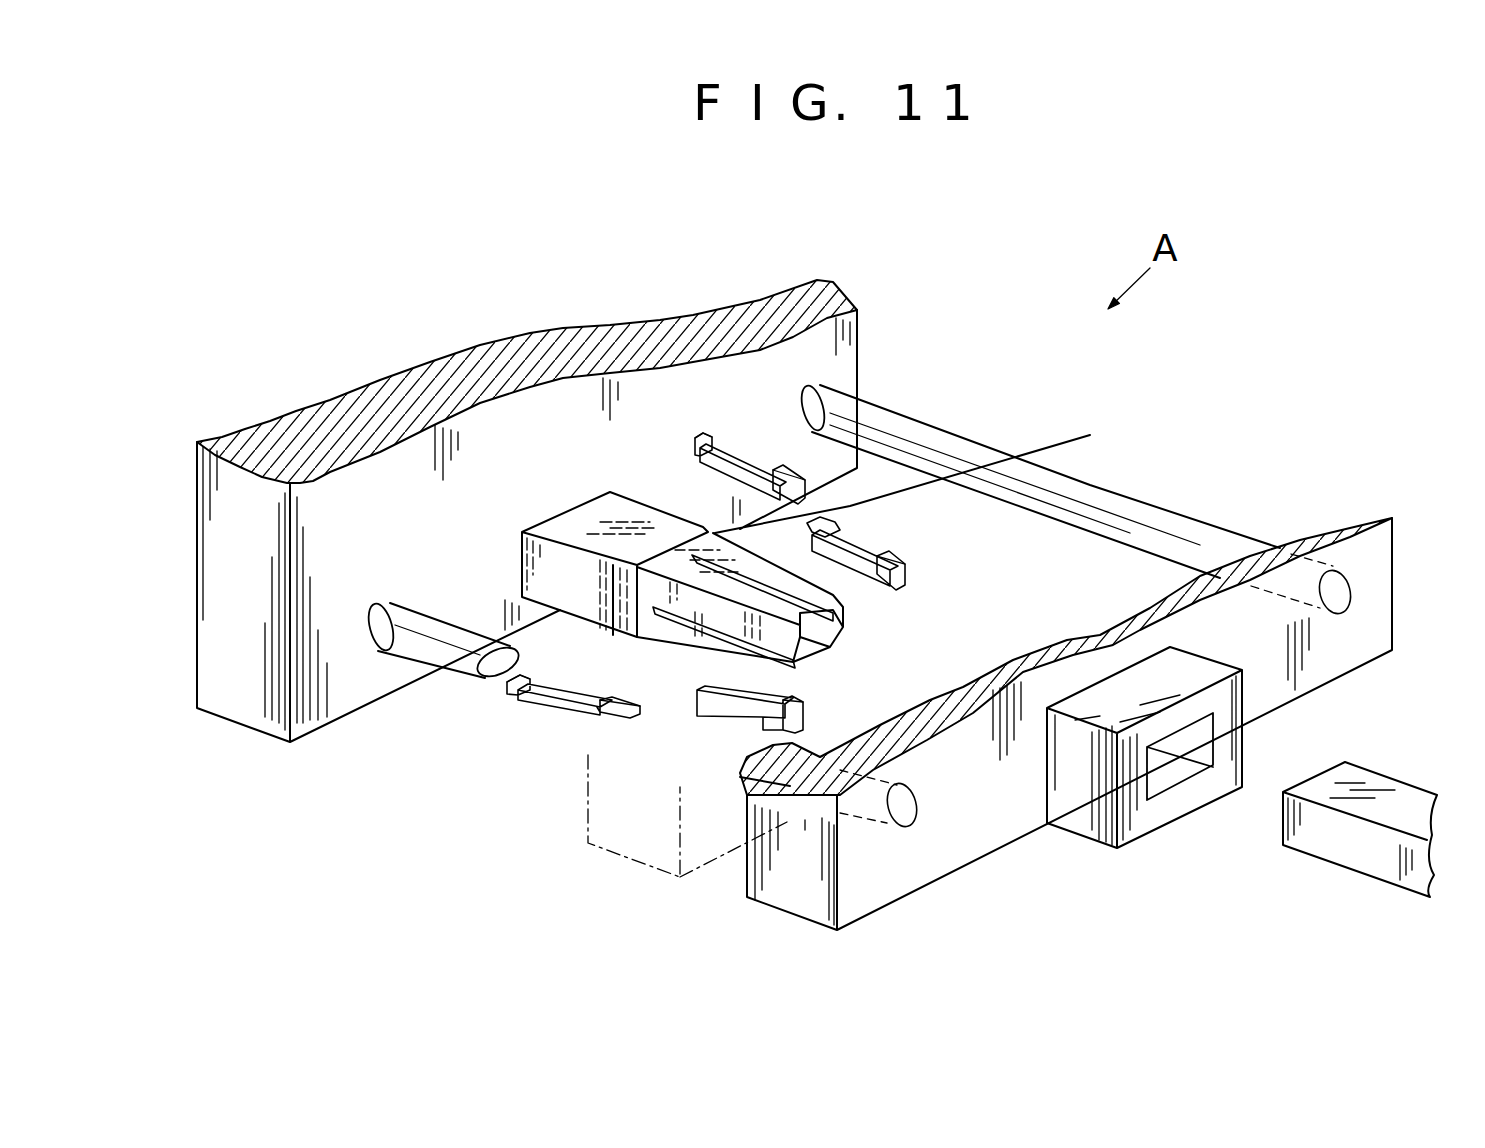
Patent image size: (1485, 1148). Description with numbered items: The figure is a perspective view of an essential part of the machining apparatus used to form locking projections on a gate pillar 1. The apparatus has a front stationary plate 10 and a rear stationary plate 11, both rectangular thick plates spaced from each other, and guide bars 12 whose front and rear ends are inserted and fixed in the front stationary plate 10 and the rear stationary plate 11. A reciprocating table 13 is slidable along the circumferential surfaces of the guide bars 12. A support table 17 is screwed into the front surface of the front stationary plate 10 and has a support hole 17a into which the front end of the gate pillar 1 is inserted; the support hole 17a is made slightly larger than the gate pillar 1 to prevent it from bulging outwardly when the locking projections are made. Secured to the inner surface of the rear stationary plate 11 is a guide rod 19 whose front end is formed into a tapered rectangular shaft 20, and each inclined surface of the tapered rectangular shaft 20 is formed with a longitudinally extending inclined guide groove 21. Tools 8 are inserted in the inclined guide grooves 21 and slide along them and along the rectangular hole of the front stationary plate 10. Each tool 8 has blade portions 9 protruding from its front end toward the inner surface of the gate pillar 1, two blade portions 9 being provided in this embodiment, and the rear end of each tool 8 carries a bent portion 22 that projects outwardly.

The gate pillar 1 is at (1360, 848).
The tool 8 is at (733, 452).
The blade portion 9 is at (800, 482).
The front stationary plate 10 is at (1360, 653).
The rear stationary plate 11 is at (843, 357).
The guide bar 12 is at (1165, 520).
The reciprocating table 13 is at (655, 853).
The support table 17 is at (1090, 822).
The support hole 17a is at (1165, 783).
The guide rod 19 is at (597, 522).
The tapered rectangular shaft 20 is at (745, 612).
The inclined guide groove 21 is at (770, 655).
The bent portion 22 is at (698, 440).